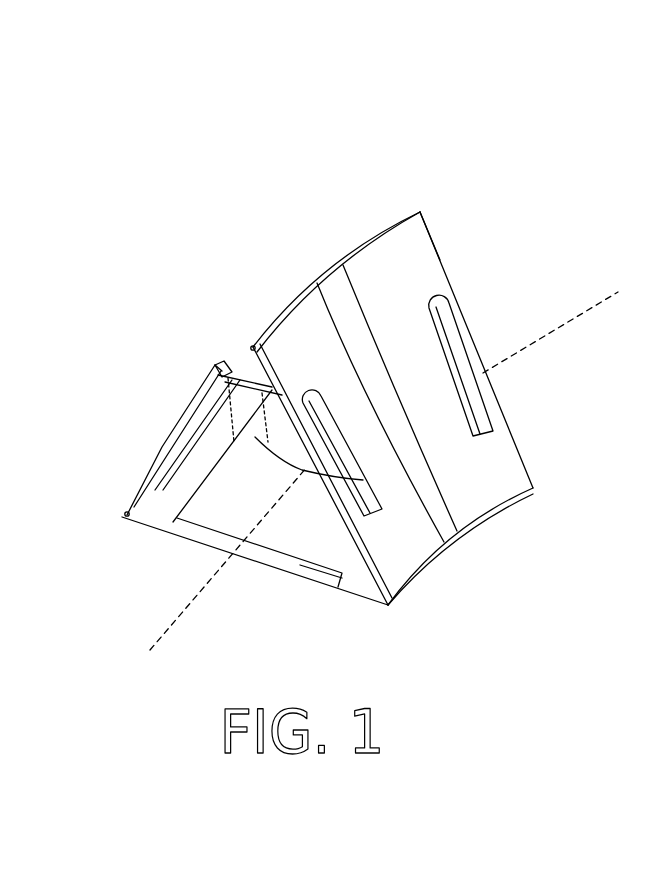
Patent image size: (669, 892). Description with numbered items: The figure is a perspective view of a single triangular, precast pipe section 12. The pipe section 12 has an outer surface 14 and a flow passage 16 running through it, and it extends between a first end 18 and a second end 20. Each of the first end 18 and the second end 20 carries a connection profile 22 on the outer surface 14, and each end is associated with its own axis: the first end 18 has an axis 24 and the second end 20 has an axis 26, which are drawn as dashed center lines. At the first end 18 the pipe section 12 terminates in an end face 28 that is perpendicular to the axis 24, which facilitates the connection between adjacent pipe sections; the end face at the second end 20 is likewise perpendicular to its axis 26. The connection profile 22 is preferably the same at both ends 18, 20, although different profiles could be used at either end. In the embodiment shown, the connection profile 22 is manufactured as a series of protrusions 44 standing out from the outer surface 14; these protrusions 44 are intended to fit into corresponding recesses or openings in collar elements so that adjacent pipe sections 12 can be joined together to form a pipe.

The pipe section 12 is at (367, 262).
The outer surface 14 is at (463, 471).
The flow passage 16 is at (253, 485).
The first end 18 is at (287, 350).
The second end 20 is at (490, 503).
The connection profile 22 is at (223, 357).
The axis 24 is at (188, 607).
The axis 26 is at (545, 332).
The end face 28 is at (322, 571).
The protrusions 44 is at (440, 303).